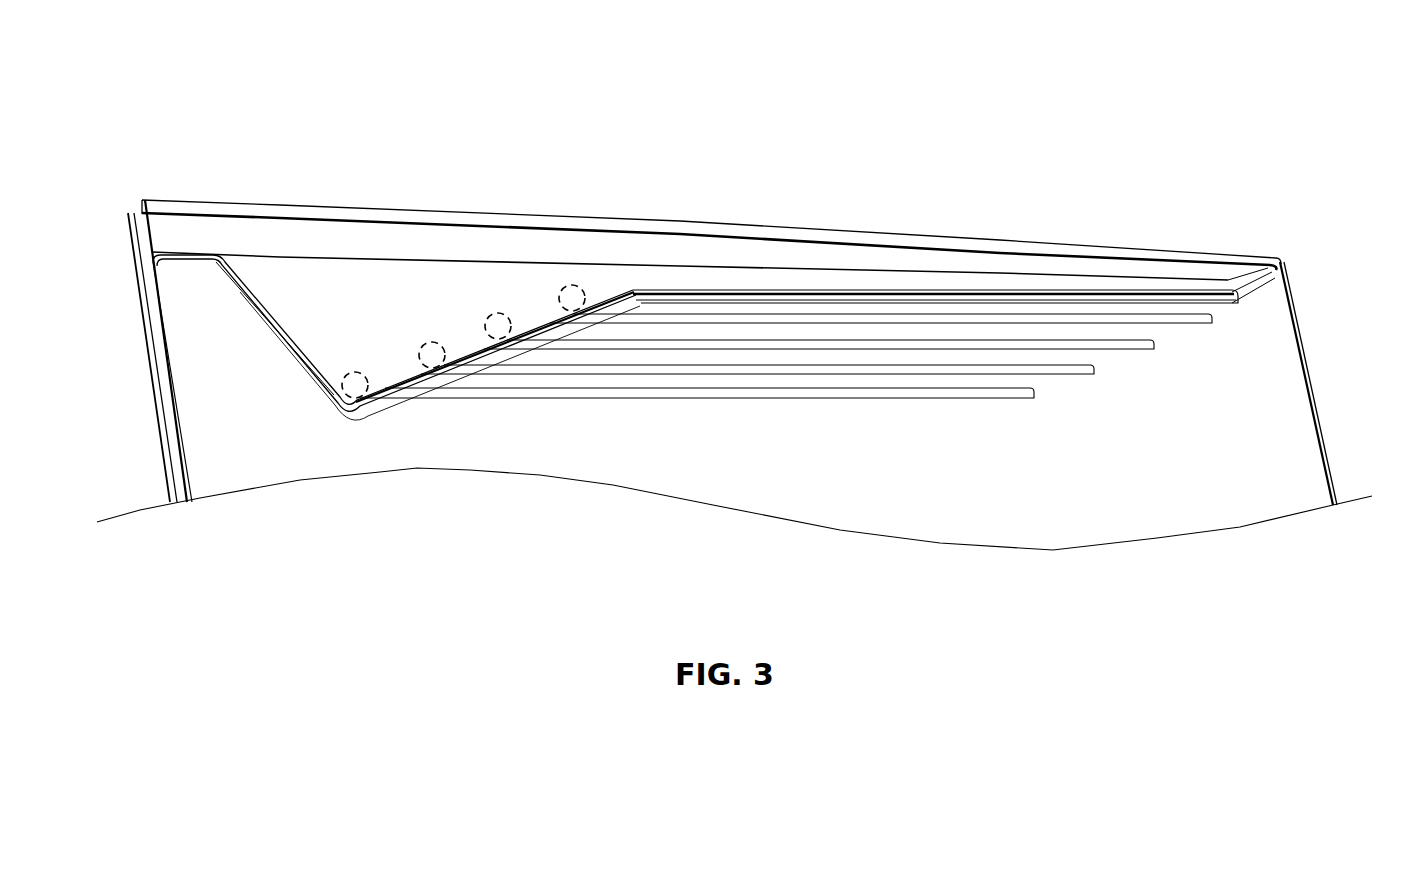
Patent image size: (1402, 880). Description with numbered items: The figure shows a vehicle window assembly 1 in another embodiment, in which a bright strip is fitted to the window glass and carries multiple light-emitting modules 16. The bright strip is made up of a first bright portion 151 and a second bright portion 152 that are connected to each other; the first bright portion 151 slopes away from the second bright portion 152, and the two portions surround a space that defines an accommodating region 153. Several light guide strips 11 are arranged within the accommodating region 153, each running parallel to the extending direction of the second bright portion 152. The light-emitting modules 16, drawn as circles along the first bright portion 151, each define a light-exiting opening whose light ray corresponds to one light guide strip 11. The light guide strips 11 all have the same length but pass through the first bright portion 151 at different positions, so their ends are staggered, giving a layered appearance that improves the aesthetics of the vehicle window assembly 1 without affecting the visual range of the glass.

The vehicle window assembly 1 is at (698, 97).
The light guide strip 11 is at (648, 322).
The light-emitting module 16 is at (497, 327).
The first bright portion 151 is at (368, 280).
The second bright portion 152 is at (919, 282).
The accommodating region 153 is at (785, 332).